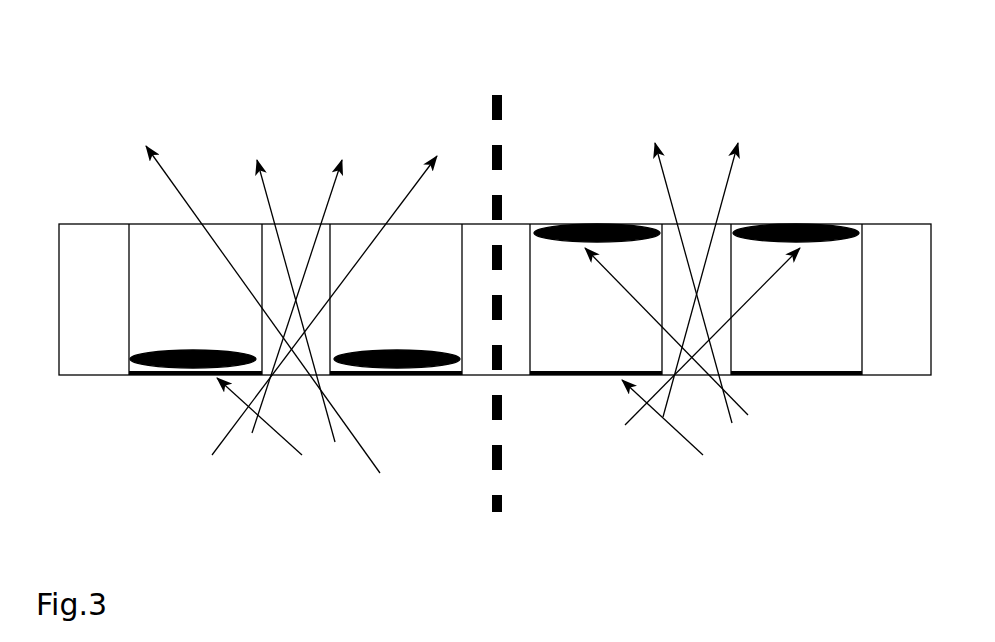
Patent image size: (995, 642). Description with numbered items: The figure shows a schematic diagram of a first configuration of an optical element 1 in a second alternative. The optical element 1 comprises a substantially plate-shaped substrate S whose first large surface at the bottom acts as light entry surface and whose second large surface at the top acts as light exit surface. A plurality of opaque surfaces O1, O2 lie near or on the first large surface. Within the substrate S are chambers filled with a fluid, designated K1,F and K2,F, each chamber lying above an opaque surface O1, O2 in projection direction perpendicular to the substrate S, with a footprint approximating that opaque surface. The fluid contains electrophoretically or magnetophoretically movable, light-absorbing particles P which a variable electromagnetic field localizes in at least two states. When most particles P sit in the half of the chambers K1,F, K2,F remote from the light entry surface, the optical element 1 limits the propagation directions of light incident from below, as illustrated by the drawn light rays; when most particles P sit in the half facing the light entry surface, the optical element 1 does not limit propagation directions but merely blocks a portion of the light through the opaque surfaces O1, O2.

The optical element 1 is at (117, 202).
The electrophoretically or magnetophoretically movable particles P is at (208, 350).
The chamber filled with fluid K1,F is at (231, 235).
The chamber filled with fluid K2,F is at (422, 297).
The substrate S is at (113, 323).
The opaque surface O1 is at (182, 377).
The opaque surface O2 is at (433, 377).